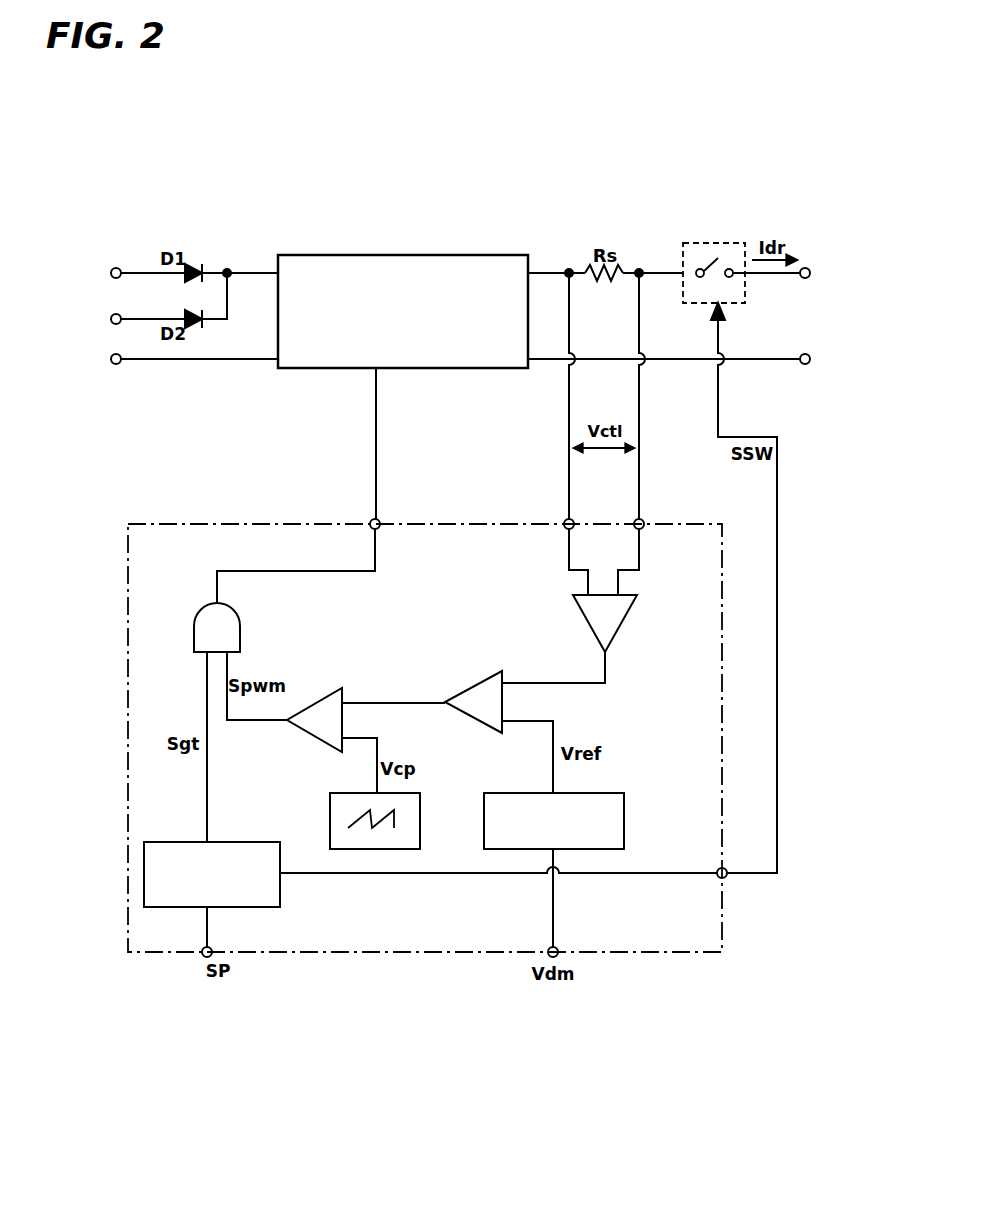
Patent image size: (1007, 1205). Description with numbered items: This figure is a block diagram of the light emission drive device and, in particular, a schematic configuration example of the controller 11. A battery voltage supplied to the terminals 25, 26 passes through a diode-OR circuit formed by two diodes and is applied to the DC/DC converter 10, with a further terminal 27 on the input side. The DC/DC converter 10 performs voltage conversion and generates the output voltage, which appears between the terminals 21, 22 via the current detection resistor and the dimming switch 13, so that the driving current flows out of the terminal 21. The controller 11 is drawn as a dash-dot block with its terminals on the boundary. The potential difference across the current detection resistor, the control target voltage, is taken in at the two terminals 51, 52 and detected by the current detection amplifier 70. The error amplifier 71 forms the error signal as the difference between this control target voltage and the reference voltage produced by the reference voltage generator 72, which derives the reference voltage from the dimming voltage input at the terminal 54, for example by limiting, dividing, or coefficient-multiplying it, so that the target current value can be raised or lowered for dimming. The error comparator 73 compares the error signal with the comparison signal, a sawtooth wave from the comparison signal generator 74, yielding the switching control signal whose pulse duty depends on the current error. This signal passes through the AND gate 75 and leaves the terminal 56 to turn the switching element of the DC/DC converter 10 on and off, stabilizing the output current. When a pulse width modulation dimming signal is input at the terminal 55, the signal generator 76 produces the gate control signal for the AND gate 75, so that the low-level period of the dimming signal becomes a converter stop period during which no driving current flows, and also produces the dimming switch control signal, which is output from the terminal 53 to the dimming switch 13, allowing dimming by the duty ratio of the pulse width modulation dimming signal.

The DC/DC converter 10 is at (378, 255).
The controller 11 is at (425, 953).
The dimming switch 13 is at (702, 243).
The terminal 21 is at (807, 268).
The terminal 22 is at (805, 364).
The terminal 25 is at (116, 268).
The terminal 26 is at (113, 315).
The terminal 27 is at (116, 364).
The terminal 51 is at (566, 519).
The terminal 52 is at (642, 519).
The terminal 53 is at (726, 879).
The terminal 54 is at (557, 948).
The terminal 55 is at (203, 957).
The terminal 56 is at (371, 519).
The current detection amplifier 70 is at (622, 620).
The error amplifier 71 is at (478, 683).
The reference voltage generator 72 is at (624, 818).
The error comparator 73 is at (326, 695).
The comparison signal generator 74 is at (420, 829).
The AND gate 75 is at (195, 622).
The signal generator 76 is at (187, 840).